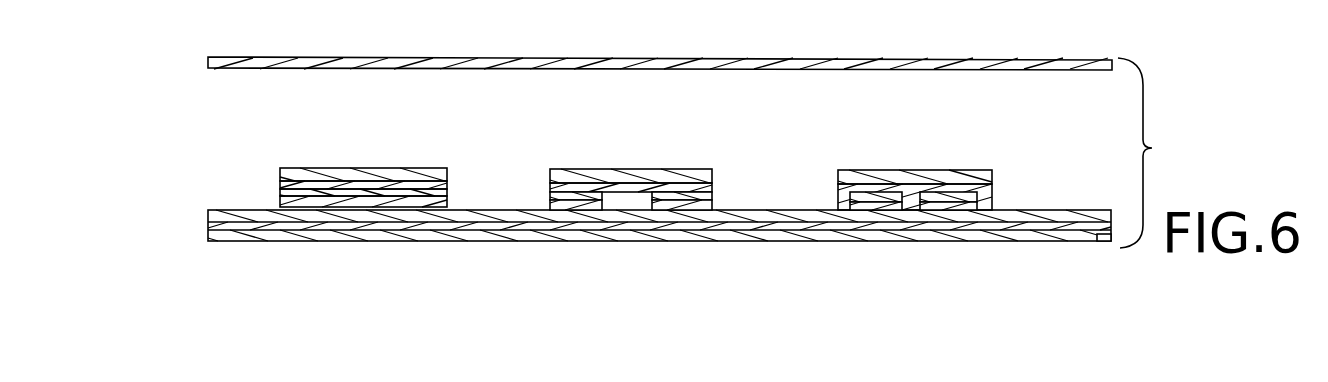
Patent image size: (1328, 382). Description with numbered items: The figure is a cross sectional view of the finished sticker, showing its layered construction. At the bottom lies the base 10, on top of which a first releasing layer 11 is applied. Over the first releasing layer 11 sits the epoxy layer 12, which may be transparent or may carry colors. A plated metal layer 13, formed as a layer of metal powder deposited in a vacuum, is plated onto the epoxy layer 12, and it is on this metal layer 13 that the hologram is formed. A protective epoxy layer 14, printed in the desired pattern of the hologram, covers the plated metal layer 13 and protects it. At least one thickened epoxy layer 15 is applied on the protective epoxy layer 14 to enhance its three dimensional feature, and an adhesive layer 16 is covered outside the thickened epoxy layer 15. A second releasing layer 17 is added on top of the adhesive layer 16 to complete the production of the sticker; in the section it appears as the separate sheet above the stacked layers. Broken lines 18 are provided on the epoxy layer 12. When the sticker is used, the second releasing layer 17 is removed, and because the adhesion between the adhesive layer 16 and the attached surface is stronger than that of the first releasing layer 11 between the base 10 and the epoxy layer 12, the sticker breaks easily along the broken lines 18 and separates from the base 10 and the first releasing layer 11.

The base 10 is at (1050, 243).
The first releasing layer 11 is at (1095, 243).
The epoxy layer 12 is at (1080, 212).
The plated metal layer 13 is at (300, 203).
The protective epoxy layer 14 is at (280, 197).
The thickened epoxy layer 15 is at (280, 183).
The adhesive layer 16 is at (280, 168).
The second releasing layer 17 is at (1112, 61).
The broken lines 18 is at (545, 209).